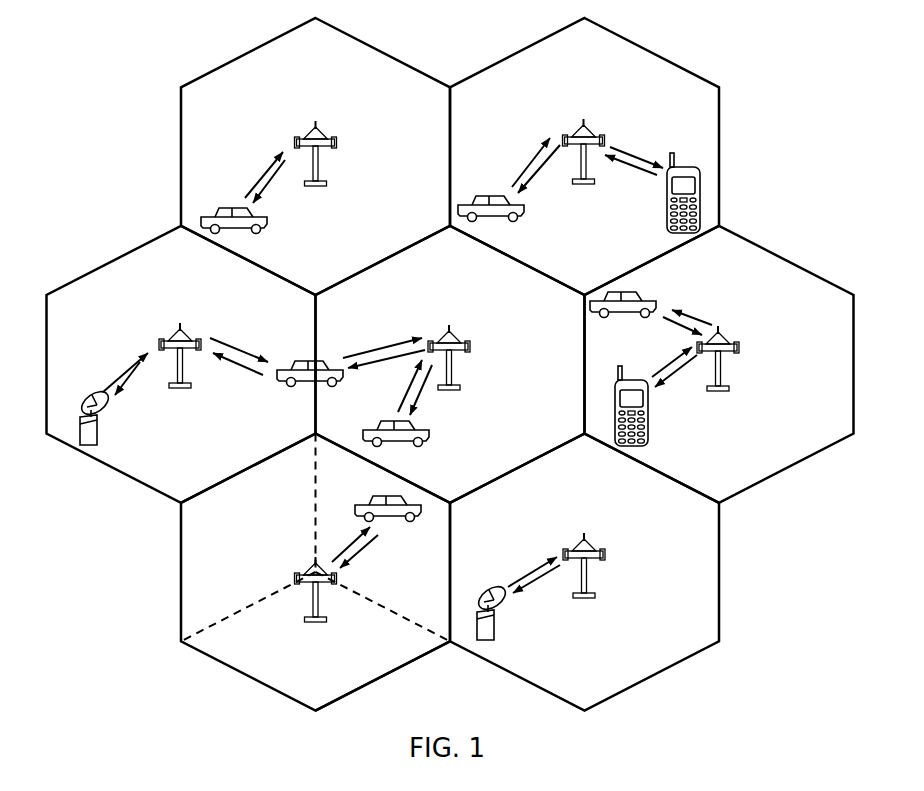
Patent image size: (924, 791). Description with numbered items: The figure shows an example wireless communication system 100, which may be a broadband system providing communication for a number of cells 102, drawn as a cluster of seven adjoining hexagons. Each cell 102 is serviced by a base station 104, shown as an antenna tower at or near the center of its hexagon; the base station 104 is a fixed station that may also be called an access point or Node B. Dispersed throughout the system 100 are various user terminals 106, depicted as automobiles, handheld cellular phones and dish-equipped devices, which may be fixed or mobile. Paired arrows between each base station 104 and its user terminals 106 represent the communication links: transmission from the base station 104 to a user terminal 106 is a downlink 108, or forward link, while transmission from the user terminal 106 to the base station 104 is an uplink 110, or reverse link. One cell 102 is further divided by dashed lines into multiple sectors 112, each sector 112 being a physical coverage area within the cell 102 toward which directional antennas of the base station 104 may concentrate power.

The wireless communication system 100 is at (840, 92).
The cell 102 is at (262, 46).
The base station 104 is at (315, 121).
The user terminal 106 is at (268, 228).
The downlink 108 is at (267, 188).
The uplink 110 is at (260, 175).
The sector 112 is at (363, 674).